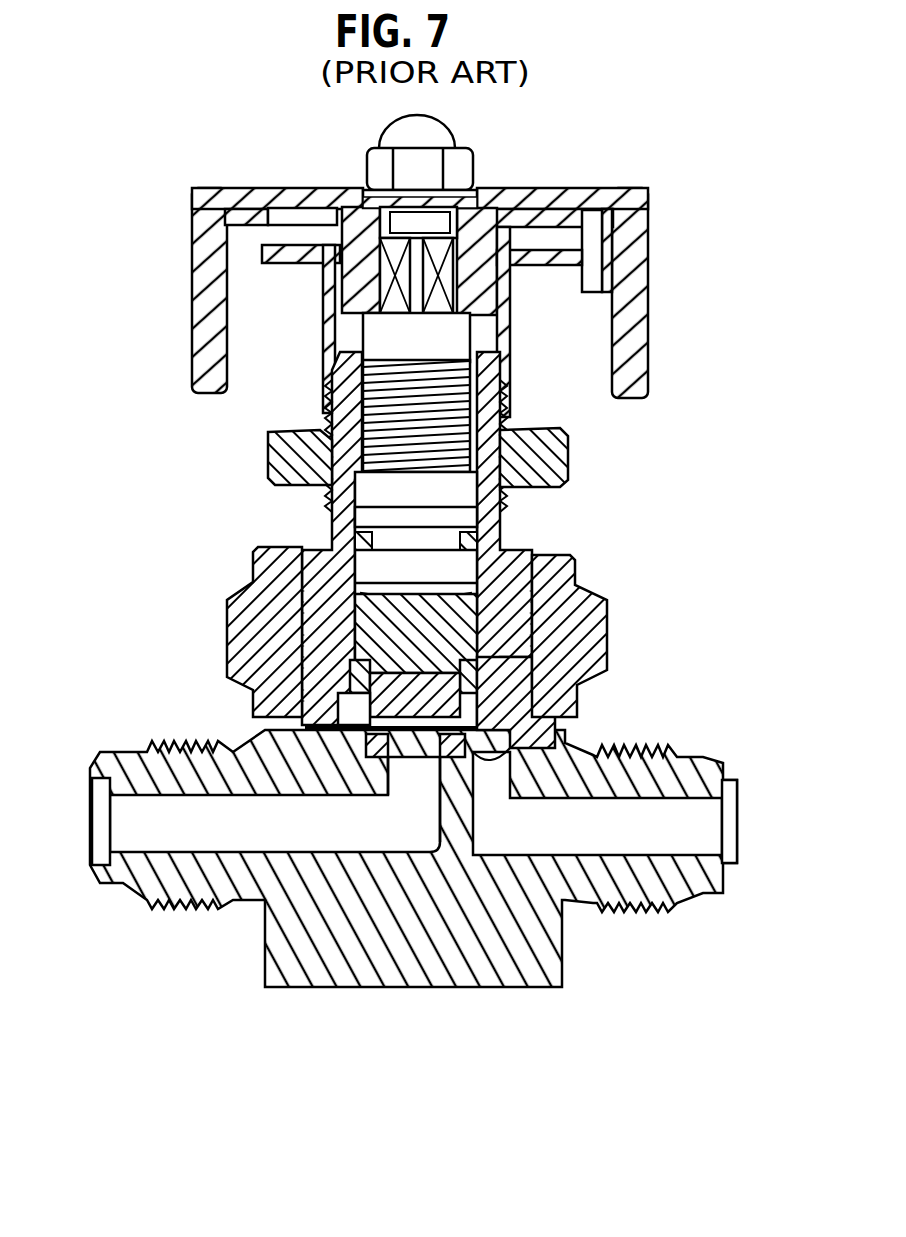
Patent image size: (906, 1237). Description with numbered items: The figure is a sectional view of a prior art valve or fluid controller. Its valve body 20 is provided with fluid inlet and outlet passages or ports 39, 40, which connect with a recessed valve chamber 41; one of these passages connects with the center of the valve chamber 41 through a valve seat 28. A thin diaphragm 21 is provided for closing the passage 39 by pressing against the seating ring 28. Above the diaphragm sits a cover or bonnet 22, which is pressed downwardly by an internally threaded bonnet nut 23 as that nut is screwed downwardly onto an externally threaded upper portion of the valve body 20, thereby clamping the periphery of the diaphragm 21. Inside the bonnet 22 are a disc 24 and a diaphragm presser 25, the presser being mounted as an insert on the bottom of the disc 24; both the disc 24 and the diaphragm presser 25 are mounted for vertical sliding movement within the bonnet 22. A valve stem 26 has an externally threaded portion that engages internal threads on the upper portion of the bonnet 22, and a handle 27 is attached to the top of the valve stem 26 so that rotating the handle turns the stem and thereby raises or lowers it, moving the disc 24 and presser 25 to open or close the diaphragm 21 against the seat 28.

The valve body 20 is at (436, 930).
The diaphragm 21 is at (510, 772).
The bonnet 22 is at (325, 555).
The bonnet nut 23 is at (250, 640).
The disc 24 is at (535, 650).
The diaphragm presser 25 is at (335, 700).
The stem 26 is at (425, 490).
The handle 27 is at (632, 322).
The valve seat 28 is at (392, 727).
The fluid inlet passage 39 is at (137, 825).
The fluid outlet passage 40 is at (697, 828).
The valve chamber 41 is at (347, 737).